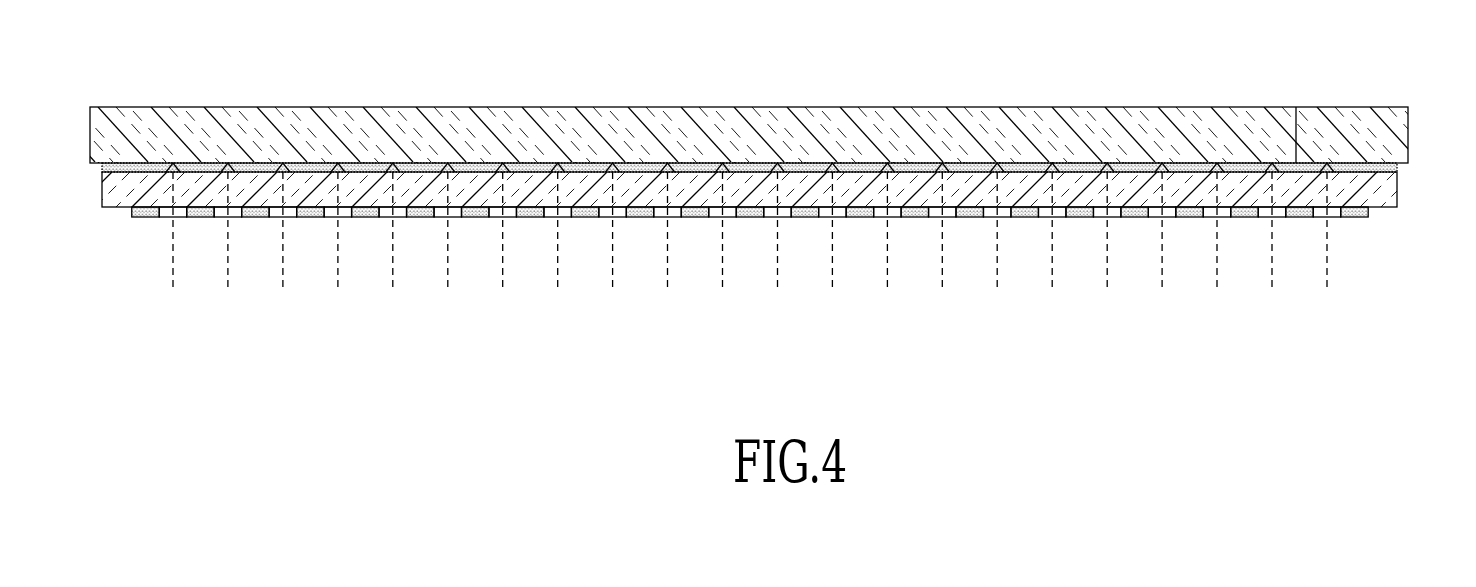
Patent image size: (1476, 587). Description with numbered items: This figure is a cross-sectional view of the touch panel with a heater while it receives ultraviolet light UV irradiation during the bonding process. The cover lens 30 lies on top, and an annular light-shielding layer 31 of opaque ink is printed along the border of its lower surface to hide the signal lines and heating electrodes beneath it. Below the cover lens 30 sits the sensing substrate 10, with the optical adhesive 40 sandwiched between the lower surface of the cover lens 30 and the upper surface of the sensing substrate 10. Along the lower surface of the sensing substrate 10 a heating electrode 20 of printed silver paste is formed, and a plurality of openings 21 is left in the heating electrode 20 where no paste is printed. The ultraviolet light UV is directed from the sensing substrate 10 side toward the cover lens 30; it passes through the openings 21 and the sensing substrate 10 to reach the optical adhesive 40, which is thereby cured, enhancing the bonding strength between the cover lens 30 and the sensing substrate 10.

The sensing substrate 10 is at (1380, 193).
The heating electrode 20 is at (772, 276).
The opening 21 is at (1265, 218).
The cover lens 30 is at (749, 87).
The light-shielding layer 31 is at (1296, 107).
The optical adhesive 40 is at (1387, 170).
The ultraviolet light UV is at (942, 272).